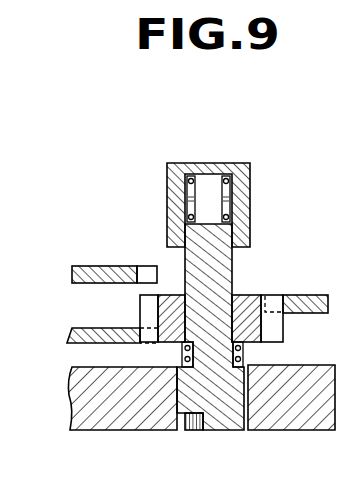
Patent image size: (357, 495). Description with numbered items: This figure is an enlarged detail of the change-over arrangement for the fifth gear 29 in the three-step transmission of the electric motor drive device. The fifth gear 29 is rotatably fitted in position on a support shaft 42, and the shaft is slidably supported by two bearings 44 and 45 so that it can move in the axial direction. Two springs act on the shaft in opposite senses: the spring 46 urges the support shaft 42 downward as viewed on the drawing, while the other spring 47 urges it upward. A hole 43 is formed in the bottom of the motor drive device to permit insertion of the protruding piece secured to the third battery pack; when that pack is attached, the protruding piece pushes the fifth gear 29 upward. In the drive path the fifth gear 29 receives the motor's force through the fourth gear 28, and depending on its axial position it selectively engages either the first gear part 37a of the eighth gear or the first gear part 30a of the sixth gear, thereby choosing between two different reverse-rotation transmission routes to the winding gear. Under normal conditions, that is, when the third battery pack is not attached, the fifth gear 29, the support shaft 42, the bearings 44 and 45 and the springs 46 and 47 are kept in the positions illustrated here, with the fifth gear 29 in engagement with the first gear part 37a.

The fourth gear 28 is at (306, 295).
The fifth gear 29 is at (249, 295).
The first gear part of the sixth gear 30a is at (108, 266).
The first gear part of the eighth gear 37a is at (64, 345).
The support shaft 42 is at (213, 407).
The hole 43 is at (225, 420).
The bearing 44 is at (257, 400).
The bearing 45 is at (241, 190).
The spring 46 is at (228, 175).
The spring 47 is at (246, 356).